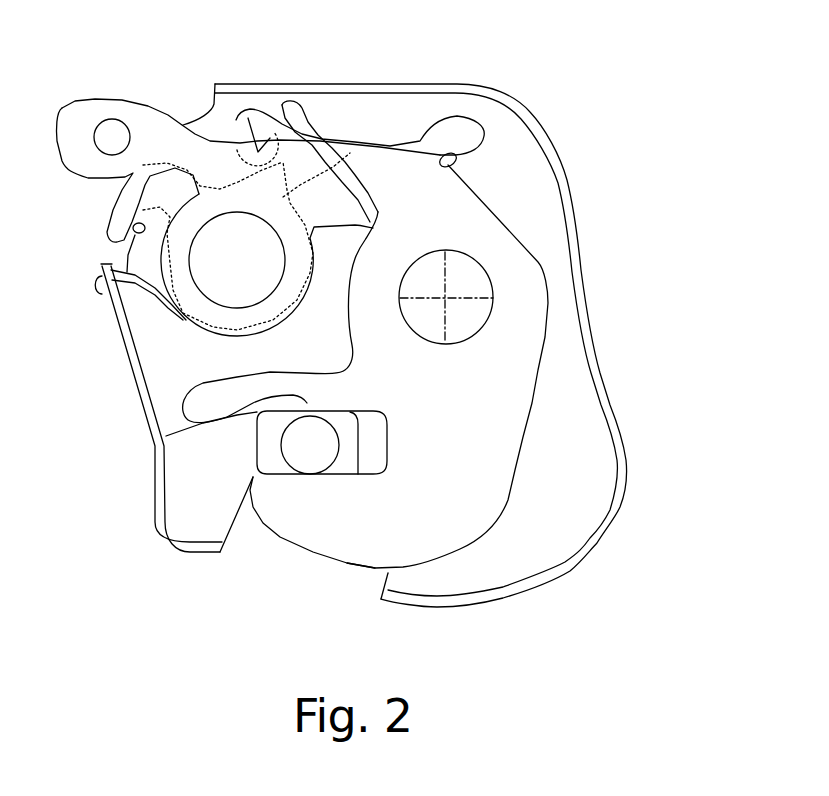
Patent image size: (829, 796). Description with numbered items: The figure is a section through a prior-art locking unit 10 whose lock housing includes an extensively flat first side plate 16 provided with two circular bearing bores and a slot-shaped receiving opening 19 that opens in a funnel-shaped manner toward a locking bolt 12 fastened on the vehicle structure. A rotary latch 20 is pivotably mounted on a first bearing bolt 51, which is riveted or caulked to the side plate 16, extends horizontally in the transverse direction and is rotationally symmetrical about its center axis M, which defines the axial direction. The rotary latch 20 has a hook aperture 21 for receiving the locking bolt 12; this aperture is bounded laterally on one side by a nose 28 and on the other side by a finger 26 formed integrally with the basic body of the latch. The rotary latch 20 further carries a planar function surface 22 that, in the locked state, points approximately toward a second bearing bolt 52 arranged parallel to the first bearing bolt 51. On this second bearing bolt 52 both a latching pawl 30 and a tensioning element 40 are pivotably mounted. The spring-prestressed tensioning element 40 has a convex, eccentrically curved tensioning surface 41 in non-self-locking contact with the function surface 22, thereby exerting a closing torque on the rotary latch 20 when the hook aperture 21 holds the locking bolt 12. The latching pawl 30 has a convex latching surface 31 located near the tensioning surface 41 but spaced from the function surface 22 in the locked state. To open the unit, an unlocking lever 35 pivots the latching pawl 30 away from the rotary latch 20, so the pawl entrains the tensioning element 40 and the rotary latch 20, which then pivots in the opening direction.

The locking unit 10 is at (554, 67).
The locking bolt 12 is at (307, 447).
The first side plate 16 is at (570, 365).
The receiving opening 19 is at (277, 468).
The rotary latch 20 is at (443, 543).
The hook aperture 21 is at (345, 470).
The function surface 22 is at (373, 215).
The finger 26 is at (162, 445).
The nose 28 is at (360, 543).
The latching pawl 30 is at (213, 110).
The latching surface 31 is at (300, 107).
The unlocking lever 35 is at (112, 137).
The tensioning element 40 is at (133, 200).
The tensioning surface 41 is at (316, 140).
The first bearing bolt 51 is at (488, 297).
The second bearing bolt 52 is at (223, 277).
The center axis M is at (447, 297).